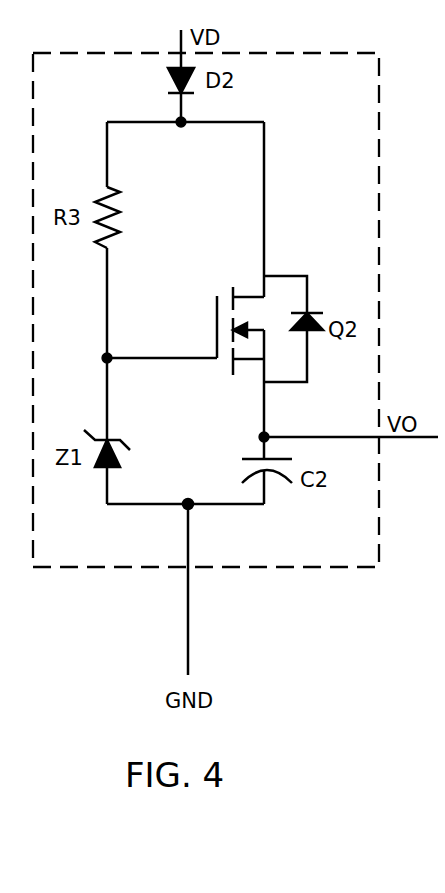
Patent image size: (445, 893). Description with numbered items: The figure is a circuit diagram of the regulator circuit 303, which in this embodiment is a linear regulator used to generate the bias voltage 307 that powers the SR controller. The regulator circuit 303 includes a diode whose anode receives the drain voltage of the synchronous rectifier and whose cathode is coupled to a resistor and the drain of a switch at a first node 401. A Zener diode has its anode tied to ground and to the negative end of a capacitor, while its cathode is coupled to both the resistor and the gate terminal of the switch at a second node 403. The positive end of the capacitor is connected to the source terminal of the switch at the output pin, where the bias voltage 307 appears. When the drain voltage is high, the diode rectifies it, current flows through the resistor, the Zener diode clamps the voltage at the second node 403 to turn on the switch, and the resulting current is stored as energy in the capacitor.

The regulator circuit 303 is at (348, 48).
The node 401 is at (171, 127).
The node 403 is at (113, 345).
The bias voltage 307 is at (359, 437).